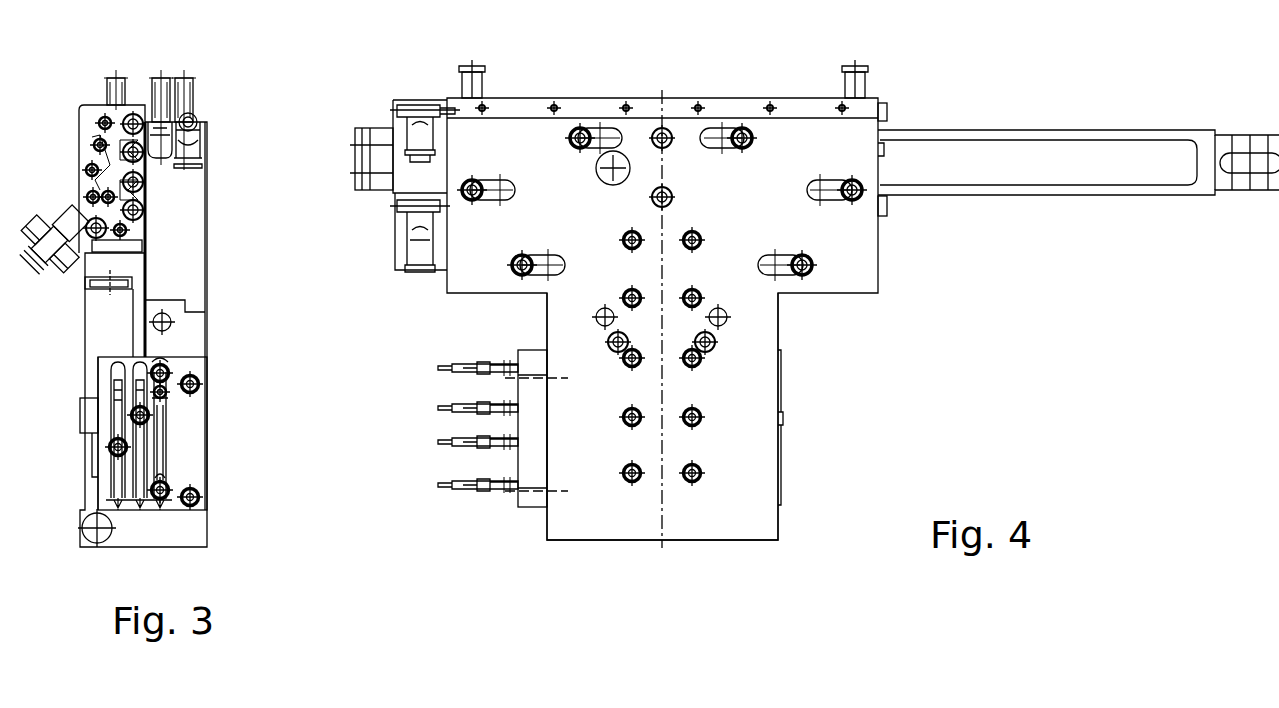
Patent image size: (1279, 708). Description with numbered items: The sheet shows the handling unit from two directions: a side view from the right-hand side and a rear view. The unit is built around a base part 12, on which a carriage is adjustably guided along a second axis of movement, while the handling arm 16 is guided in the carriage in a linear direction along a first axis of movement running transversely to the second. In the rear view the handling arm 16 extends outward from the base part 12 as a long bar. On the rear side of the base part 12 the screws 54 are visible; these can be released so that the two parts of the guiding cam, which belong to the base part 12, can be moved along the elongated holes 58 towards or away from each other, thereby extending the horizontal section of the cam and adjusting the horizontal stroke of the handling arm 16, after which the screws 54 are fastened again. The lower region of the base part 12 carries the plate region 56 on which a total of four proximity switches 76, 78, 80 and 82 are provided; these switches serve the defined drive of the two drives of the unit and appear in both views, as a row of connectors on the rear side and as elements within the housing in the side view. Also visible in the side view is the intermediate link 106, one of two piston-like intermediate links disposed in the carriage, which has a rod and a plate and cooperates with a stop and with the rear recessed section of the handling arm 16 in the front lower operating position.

In FIG. 4, the base part 12 is at (760, 490).
In FIG. 4, the handling arm 16 is at (980, 168).
In FIG. 4, the screws 54 is at (747, 128).
In FIG. 4, the lower plate portion 56 is at (745, 378).
In FIG. 4, the elongated holes 58 is at (565, 262).
In FIG. 3, the proximity switch 76 is at (168, 490).
In FIG. 4, the proximity switch 76 is at (458, 485).
In FIG. 3, the proximity switch 78 is at (110, 447).
In FIG. 4, the proximity switch 78 is at (458, 442).
In FIG. 3, the proximity switch 80 is at (132, 414).
In FIG. 4, the proximity switch 80 is at (458, 408).
In FIG. 3, the proximity switch 82 is at (168, 375).
In FIG. 4, the proximity switch 82 is at (458, 368).
In FIG. 3, the intermediate link 106 is at (85, 288).